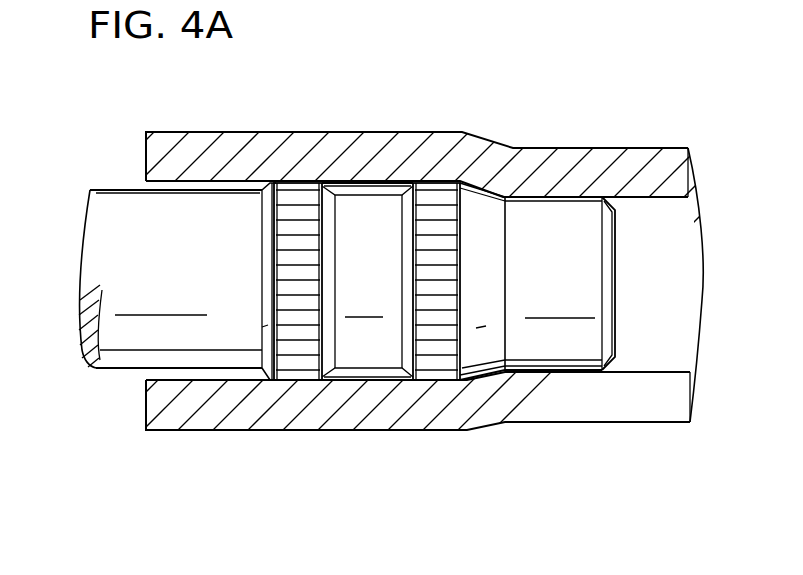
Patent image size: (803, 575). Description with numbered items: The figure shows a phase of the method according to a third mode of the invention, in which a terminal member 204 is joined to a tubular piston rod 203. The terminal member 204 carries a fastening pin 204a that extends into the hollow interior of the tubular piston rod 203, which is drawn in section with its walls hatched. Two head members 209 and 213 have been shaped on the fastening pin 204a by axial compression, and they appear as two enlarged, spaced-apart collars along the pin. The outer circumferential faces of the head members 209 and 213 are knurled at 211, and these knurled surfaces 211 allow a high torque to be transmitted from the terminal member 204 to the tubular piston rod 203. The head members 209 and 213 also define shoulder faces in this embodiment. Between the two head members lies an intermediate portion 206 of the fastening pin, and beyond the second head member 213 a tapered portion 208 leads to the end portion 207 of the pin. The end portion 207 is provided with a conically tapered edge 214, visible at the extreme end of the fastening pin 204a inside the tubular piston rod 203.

The tubular piston rod 203 is at (637, 172).
The terminal member 204 is at (104, 197).
The fastening pin 204a is at (236, 198).
The cylindrical intermediate portion 206 is at (375, 194).
The end portion 207 is at (585, 283).
The tapered portion 208 is at (497, 185).
The head member 209 is at (298, 198).
The knurled surfaces 211 is at (290, 268).
The head member 213 is at (433, 200).
The conically tapered edge 214 is at (606, 240).